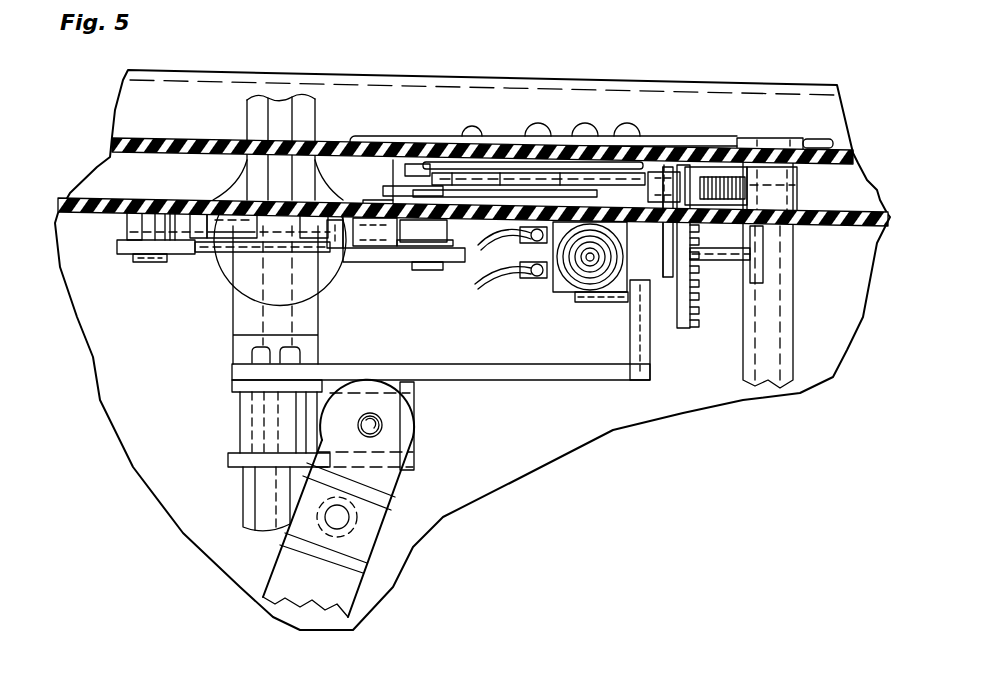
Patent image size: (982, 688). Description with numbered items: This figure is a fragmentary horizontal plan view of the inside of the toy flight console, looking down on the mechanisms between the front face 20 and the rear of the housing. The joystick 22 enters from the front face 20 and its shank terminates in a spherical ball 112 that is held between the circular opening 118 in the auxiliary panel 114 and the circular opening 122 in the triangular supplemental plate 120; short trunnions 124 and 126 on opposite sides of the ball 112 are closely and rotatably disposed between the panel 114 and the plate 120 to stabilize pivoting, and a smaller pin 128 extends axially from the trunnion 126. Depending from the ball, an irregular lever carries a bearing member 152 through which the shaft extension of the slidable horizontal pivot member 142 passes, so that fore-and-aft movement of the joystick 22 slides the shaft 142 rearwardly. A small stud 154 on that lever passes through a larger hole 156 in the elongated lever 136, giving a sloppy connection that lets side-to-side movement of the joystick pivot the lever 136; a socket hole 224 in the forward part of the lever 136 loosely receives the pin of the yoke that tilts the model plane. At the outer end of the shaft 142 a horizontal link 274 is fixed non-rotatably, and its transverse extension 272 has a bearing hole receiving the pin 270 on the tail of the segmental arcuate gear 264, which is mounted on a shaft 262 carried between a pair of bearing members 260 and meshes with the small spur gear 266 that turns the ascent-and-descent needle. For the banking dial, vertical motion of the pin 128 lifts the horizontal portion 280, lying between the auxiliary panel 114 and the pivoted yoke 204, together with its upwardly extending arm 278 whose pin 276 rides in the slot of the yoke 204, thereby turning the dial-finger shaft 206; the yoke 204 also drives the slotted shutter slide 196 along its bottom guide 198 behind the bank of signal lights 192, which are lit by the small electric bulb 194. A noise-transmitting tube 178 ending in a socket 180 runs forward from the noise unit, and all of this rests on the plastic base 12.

The base 12 is at (448, 76).
The front face 20 is at (207, 137).
The joystick 22 is at (312, 100).
The spherical ball 112 is at (262, 285).
The auxiliary panel 114 is at (516, 232).
The circular opening 118 is at (213, 198).
The supplemental plate 120 is at (120, 244).
The circular opening 122 is at (345, 265).
The trunnion 124 is at (200, 265).
The trunnion 126 is at (375, 200).
The pin 128 is at (350, 263).
The elongated lever 136 is at (350, 600).
The pivot member 142 is at (243, 500).
The bearing member 152 is at (240, 423).
The stud 154 is at (383, 425).
The hole 156 is at (406, 438).
The noise-transmitting tube 178 is at (795, 298).
The socket 180 is at (787, 138).
The bank of signal lights 192 is at (622, 128).
The electric bulb 194 is at (570, 292).
The shutter slide 196 is at (670, 178).
The bottom guide 198 is at (668, 232).
The pivoted yoke 204 is at (650, 165).
The shaft 206 is at (470, 127).
The socket hole 224 is at (349, 518).
The bearing members 260 is at (763, 280).
The shaft 262 is at (765, 257).
The segmental arcuate gear 264 is at (700, 280).
The spur gear 266 is at (792, 191).
The pin 270 is at (625, 295).
The transverse extension 272 is at (652, 362).
The horizontal link 274 is at (540, 365).
The pin 276 is at (563, 160).
The arm 278 is at (493, 197).
The horizontal portion 280 is at (393, 165).